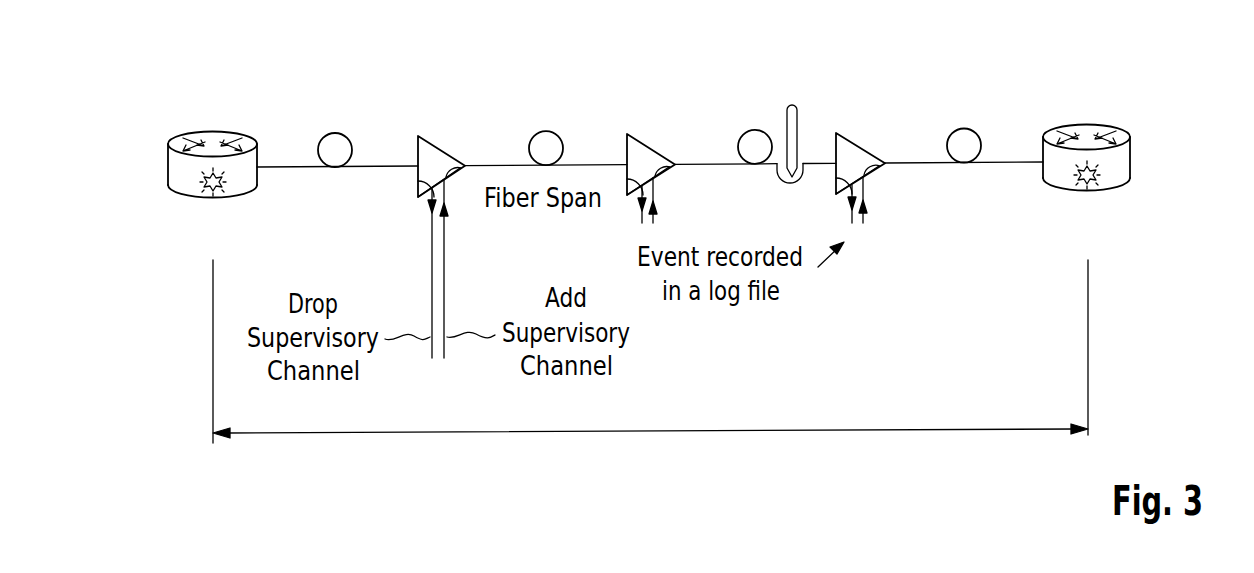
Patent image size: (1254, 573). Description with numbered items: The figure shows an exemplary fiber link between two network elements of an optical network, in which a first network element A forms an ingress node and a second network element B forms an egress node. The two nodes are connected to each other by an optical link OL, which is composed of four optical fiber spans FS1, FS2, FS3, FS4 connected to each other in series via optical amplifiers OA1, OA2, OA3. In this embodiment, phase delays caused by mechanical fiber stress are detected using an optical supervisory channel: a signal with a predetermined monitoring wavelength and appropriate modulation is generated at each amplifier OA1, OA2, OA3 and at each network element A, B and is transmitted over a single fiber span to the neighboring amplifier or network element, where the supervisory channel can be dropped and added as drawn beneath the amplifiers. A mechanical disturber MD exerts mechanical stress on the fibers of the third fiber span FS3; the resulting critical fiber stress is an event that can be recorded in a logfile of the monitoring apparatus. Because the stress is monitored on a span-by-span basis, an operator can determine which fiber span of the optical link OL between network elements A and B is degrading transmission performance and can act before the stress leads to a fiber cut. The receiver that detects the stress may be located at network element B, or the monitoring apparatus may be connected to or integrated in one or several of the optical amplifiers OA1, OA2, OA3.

The network element A is at (212, 132).
The network element B is at (1087, 122).
The fiber span FS1 is at (335, 133).
The fiber span FS2 is at (545, 131).
The fiber span FS3 is at (755, 129).
The fiber span FS4 is at (964, 128).
The optical amplifier OA1 is at (445, 148).
The optical amplifier OA2 is at (655, 148).
The optical amplifier OA3 is at (862, 143).
The mechanical disturber MD is at (797, 103).
The optical link OL is at (692, 433).